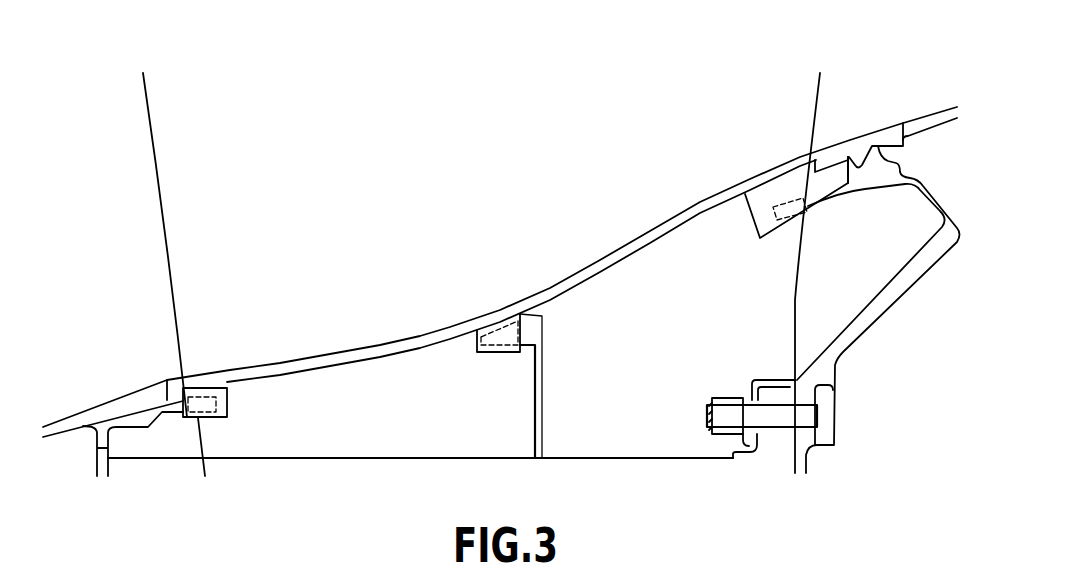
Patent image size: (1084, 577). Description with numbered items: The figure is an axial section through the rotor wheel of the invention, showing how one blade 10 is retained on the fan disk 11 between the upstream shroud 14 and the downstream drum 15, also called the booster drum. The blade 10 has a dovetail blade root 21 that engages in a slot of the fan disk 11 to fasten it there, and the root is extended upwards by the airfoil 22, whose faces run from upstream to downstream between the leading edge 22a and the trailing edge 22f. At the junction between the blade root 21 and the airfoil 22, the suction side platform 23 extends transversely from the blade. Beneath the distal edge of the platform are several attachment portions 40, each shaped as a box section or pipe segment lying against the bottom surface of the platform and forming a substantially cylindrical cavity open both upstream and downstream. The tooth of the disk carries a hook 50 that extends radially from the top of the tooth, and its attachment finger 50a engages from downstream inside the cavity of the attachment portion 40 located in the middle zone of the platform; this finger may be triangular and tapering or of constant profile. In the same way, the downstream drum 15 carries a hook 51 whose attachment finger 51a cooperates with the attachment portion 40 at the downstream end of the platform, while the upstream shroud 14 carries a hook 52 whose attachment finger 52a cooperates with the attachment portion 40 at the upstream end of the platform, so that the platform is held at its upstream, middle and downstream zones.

The blade 10 is at (889, 77).
The fan disk 11 is at (450, 489).
The upstream shroud 14 is at (63, 422).
The downstream drum 15 is at (931, 197).
The blade root 21 is at (397, 415).
The airfoil 22 is at (452, 182).
The leading edge 22a is at (162, 187).
The trailing edge 22f is at (822, 95).
The suction side platform 23 is at (513, 298).
The attachment portion 40 is at (232, 417).
The hook 50 is at (550, 395).
The attachment finger 50a is at (492, 326).
The hook 51 is at (839, 214).
The attachment finger 51a is at (783, 201).
The hook 52 is at (166, 422).
The attachment finger 52a is at (198, 400).